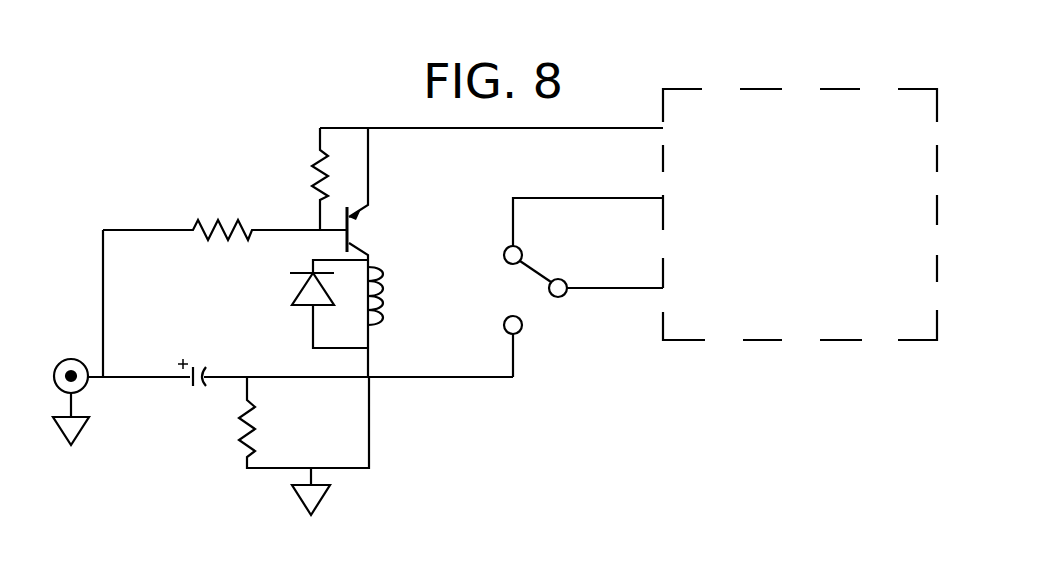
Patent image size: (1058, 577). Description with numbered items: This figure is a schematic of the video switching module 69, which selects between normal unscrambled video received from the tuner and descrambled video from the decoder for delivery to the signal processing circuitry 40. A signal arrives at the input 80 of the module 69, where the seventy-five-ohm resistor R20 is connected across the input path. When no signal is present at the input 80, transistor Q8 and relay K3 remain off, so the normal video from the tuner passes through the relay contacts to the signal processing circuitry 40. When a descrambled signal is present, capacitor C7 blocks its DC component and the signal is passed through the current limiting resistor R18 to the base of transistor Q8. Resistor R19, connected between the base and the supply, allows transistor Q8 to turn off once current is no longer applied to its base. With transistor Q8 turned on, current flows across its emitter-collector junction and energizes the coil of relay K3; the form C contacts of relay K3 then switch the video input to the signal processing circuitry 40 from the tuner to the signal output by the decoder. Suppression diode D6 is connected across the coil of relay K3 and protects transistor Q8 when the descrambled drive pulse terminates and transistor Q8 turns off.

The video switching module 69 is at (166, 182).
The input 80 is at (86, 389).
The signal processing circuitry 40 is at (832, 340).
The current limiting resistor R18 is at (225, 217).
The resistor R19 is at (291, 179).
The resistor R20 is at (277, 423).
The transistor Q8 is at (378, 252).
The suppression diode D6 is at (304, 304).
The capacitor C7 is at (194, 387).
The relay K3 is at (515, 287).